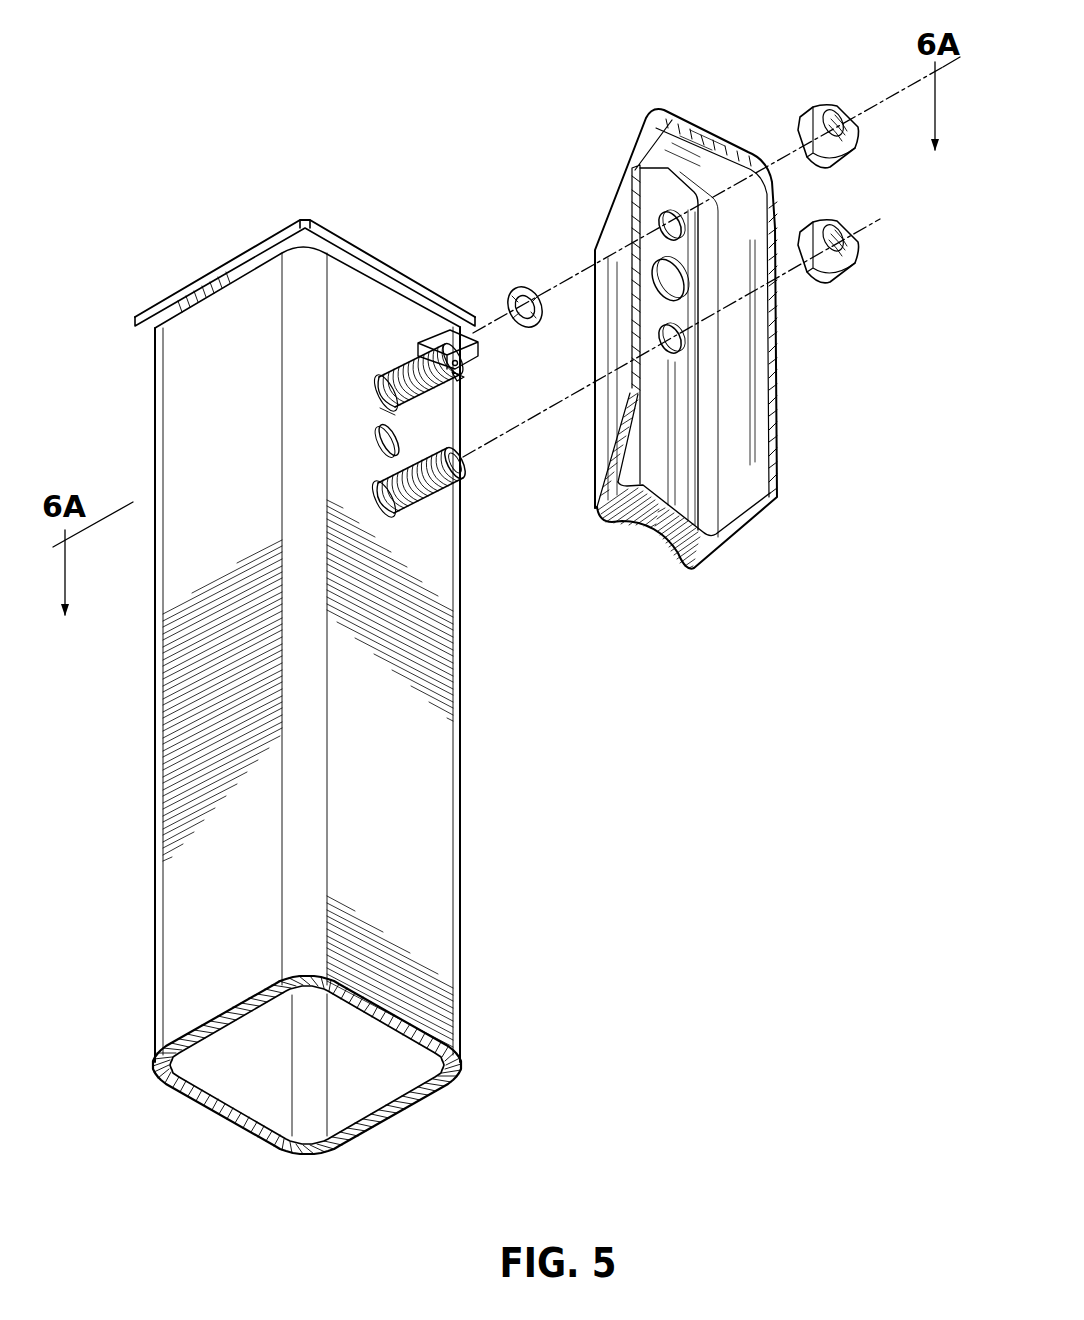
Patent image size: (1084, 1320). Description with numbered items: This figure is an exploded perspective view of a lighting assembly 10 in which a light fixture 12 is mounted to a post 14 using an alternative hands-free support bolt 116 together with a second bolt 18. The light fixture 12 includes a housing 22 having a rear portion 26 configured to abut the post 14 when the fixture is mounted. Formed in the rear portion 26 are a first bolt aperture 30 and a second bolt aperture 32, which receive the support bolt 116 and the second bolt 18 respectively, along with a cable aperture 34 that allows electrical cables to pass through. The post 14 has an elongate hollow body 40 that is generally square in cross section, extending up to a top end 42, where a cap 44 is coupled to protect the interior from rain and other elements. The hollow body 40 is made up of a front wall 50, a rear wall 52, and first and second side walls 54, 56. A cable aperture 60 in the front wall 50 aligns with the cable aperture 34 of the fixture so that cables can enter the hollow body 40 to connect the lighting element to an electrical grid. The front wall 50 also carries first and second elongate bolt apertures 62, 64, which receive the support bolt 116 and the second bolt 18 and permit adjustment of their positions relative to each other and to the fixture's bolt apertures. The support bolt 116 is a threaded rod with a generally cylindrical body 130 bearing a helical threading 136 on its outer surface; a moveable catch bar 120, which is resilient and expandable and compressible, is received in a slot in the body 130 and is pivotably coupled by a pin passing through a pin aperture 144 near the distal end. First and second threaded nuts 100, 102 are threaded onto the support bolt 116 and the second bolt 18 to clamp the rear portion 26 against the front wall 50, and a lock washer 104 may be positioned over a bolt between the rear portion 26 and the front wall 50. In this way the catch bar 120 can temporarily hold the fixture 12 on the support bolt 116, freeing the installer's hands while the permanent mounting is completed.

The lighting assembly 10 is at (178, 172).
The light fixture 12 is at (673, 75).
The post 14 is at (142, 718).
The second bolt 18 is at (436, 498).
The housing 22 is at (723, 117).
The rear portion 26 is at (593, 290).
The first bolt aperture 30 is at (680, 226).
The second bolt aperture 32 is at (680, 340).
The cable aperture 34 is at (682, 280).
The hollow body 40 is at (155, 455).
The top end 42 is at (230, 275).
The cap 44 is at (287, 227).
The front wall 50 is at (367, 849).
The rear wall 52 is at (232, 1068).
The first side wall 54 is at (202, 921).
The second side wall 56 is at (378, 1053).
The cable aperture 60 is at (378, 445).
The first elongate bolt aperture 62 is at (378, 418).
The second elongate bolt aperture 64 is at (377, 490).
The first threaded nut 100 is at (826, 112).
The second threaded nut 102 is at (838, 268).
The lock washer 104 is at (525, 290).
The support bolt 116 is at (402, 357).
The moveable catch bar 120 is at (478, 343).
The cylindrical body 130 is at (462, 363).
The helical threading 136 is at (385, 374).
The pin aperture 144 is at (462, 381).